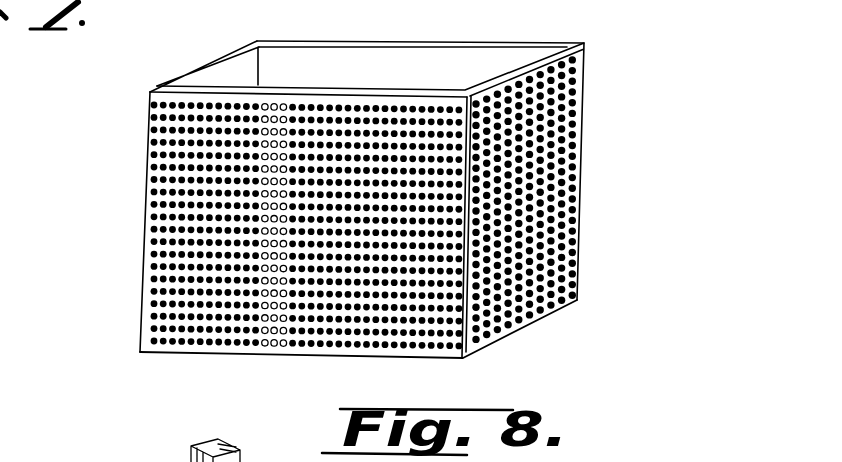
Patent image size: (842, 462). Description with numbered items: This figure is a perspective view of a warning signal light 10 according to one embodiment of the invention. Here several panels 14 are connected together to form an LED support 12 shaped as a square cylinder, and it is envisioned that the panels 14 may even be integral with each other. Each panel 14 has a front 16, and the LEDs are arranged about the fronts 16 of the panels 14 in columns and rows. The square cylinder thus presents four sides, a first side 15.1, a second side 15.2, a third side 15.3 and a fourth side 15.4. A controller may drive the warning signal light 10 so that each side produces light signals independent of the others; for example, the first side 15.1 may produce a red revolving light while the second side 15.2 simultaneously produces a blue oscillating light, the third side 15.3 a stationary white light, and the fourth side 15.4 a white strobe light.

The warning signal light 10 is at (113, 199).
The LED support 12 is at (138, 341).
The panel 14 is at (150, 242).
The first side 15.1 is at (443, 350).
The second side 15.2 is at (568, 211).
The third side 15.3 is at (470, 43).
The fourth side 15.4 is at (147, 99).
The front 16 is at (412, 226).